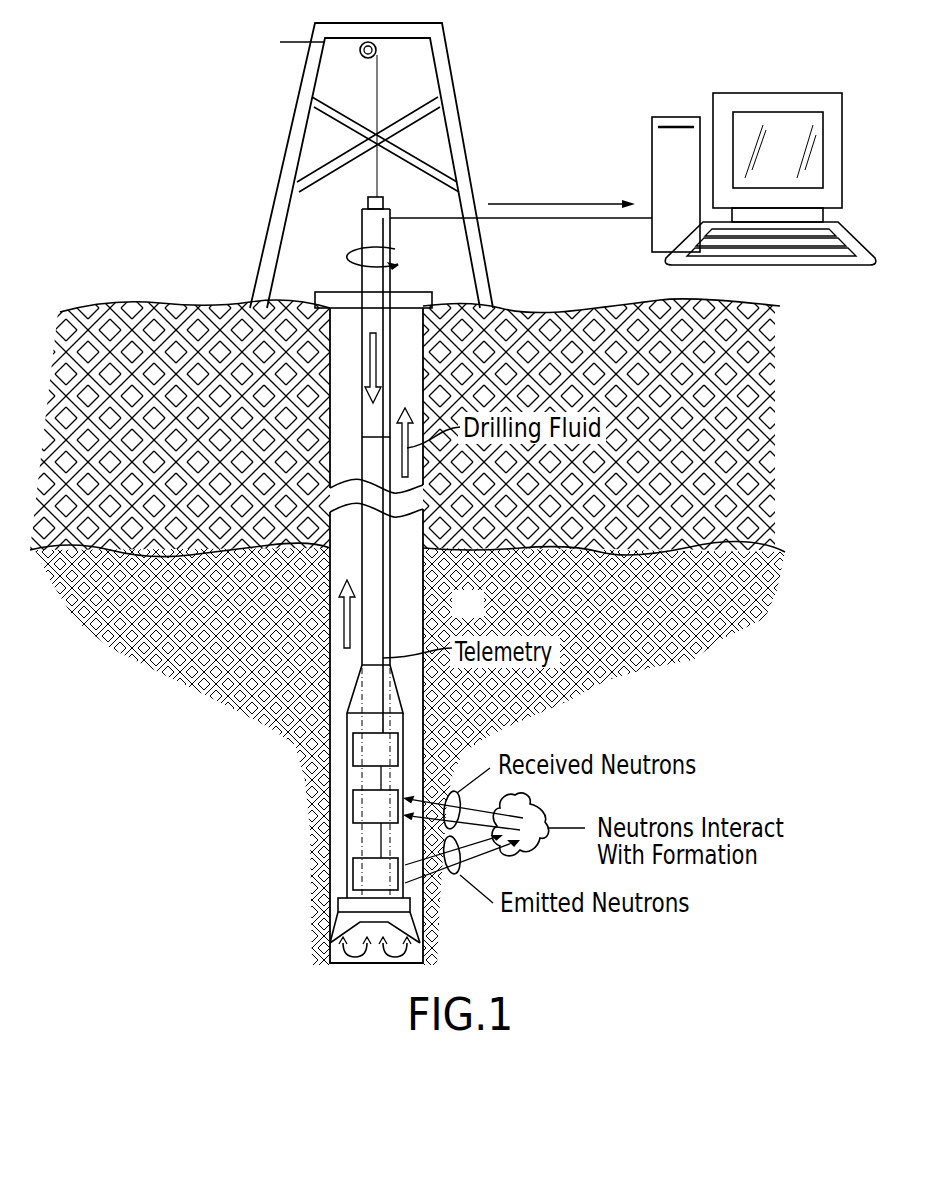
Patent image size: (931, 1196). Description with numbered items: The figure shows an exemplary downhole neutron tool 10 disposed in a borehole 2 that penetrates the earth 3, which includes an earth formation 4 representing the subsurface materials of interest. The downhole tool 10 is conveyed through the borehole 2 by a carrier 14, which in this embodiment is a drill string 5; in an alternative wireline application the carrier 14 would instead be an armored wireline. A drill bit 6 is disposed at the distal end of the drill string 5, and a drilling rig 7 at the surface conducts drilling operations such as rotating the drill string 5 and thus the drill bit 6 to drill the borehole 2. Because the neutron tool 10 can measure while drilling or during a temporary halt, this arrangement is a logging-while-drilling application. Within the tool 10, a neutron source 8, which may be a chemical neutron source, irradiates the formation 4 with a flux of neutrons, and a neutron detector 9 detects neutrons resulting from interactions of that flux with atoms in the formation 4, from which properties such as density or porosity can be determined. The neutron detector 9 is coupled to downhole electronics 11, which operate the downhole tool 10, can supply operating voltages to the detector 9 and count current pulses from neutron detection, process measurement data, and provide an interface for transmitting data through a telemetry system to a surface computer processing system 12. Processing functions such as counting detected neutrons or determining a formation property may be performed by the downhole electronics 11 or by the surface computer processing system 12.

The borehole 2 is at (335, 453).
The earth 3 is at (685, 379).
The earth formation 4 is at (718, 621).
The drill string 5 is at (362, 413).
The drill bit 6 is at (345, 922).
The drilling rig 7 is at (229, 253).
The neutron source 8 is at (383, 887).
The neutron detector 9 is at (383, 820).
The downhole neutron tool 10 is at (333, 781).
The downhole electronics 11 is at (375, 750).
The surface computer processing system 12 is at (668, 120).
The carrier 14 is at (390, 625).